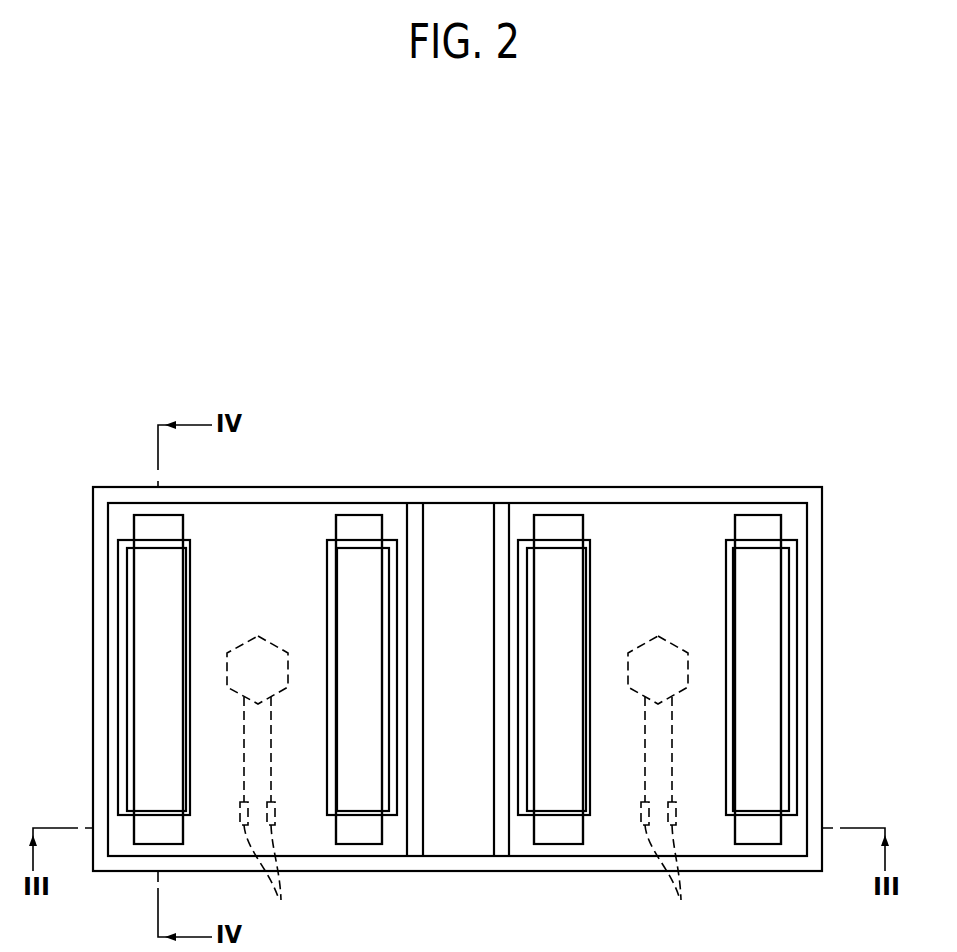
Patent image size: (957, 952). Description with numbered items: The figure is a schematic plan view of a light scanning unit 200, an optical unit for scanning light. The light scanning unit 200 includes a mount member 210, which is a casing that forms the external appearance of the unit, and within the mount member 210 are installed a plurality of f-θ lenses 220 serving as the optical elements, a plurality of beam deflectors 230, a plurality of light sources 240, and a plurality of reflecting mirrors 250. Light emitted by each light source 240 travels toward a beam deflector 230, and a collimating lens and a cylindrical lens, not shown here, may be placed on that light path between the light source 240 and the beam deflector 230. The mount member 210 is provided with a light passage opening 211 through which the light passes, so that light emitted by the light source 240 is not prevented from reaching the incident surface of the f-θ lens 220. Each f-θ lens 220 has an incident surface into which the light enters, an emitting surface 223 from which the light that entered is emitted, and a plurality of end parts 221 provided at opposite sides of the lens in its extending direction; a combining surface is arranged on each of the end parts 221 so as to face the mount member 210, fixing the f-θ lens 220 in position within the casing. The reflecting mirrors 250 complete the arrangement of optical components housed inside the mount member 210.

The light scanning unit 200 is at (706, 420).
The mount member 210 is at (353, 497).
The light passage opening 211 is at (118, 693).
The f-θ lens 220 is at (145, 604).
The end part 221 is at (145, 530).
The emitting surface 223 is at (145, 647).
The beam deflector 230 is at (237, 647).
The light source 240 is at (468, 811).
The reflecting mirror 250 is at (132, 740).